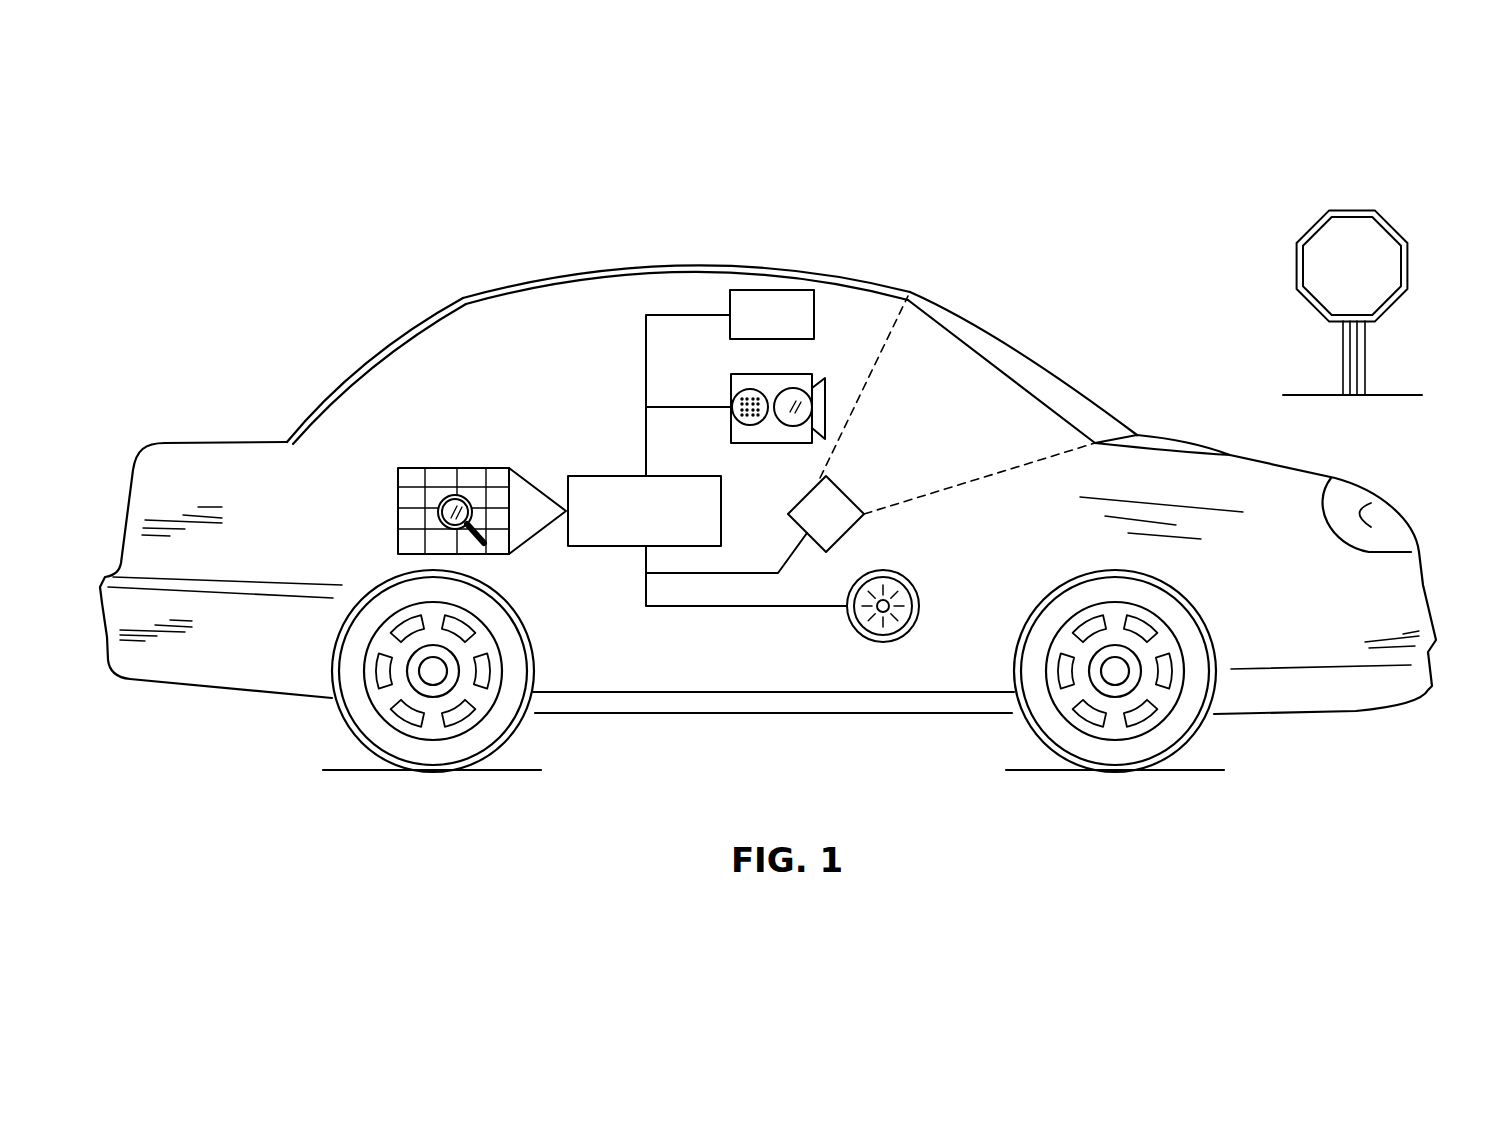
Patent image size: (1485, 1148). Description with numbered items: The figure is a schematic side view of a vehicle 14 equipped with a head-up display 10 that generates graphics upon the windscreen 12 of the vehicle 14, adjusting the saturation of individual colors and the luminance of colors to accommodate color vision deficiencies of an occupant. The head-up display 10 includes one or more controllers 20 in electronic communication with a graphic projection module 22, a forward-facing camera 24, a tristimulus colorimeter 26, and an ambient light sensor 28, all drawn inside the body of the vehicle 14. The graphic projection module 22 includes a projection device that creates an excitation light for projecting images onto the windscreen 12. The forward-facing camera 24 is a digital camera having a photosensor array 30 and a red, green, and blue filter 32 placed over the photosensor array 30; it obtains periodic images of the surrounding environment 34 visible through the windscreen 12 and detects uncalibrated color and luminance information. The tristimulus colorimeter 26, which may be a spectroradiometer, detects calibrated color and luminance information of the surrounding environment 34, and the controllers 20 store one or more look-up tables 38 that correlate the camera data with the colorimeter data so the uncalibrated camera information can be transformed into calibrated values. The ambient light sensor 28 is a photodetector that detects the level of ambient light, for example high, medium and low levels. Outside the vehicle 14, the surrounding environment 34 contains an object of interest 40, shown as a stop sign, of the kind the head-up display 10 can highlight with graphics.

The head-up display 10 is at (985, 250).
The windscreen 12 is at (1013, 347).
The vehicle 14 is at (412, 327).
The controller 20 is at (633, 529).
The graphic projection module 22 is at (814, 529).
The forward-facing camera 24 is at (756, 410).
The tristimulus colorimeter 26 is at (760, 329).
The ambient light sensor 28 is at (921, 606).
The photosensor array 30 is at (751, 424).
The RGB filter 32 is at (801, 393).
The surrounding environment 34 is at (1377, 261).
The look-up table 38 is at (398, 516).
The object of interest 40 is at (1372, 210).